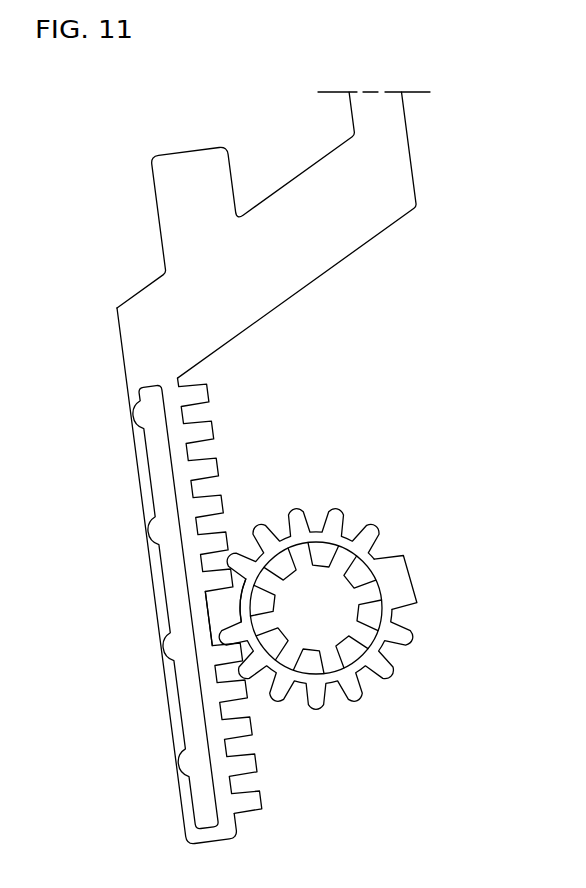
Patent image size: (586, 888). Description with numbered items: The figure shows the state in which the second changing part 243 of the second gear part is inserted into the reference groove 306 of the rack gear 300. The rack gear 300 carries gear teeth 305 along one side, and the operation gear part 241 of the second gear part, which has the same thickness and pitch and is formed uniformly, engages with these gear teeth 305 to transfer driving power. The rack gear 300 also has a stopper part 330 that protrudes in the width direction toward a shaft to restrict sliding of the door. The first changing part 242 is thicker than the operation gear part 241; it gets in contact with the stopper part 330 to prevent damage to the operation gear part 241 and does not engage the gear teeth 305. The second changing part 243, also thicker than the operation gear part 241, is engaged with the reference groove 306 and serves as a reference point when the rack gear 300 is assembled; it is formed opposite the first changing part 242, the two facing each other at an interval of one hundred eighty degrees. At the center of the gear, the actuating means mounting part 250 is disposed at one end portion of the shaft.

The rack gear 300 is at (195, 576).
The gear teeth 305 is at (258, 795).
The reference groove 306 is at (207, 620).
The stopper part 330 is at (362, 251).
The operation gear part 241 is at (292, 633).
The first changing part 242 is at (413, 576).
The second changing part 243 is at (230, 628).
The actuating means mounting part 250 is at (343, 583).